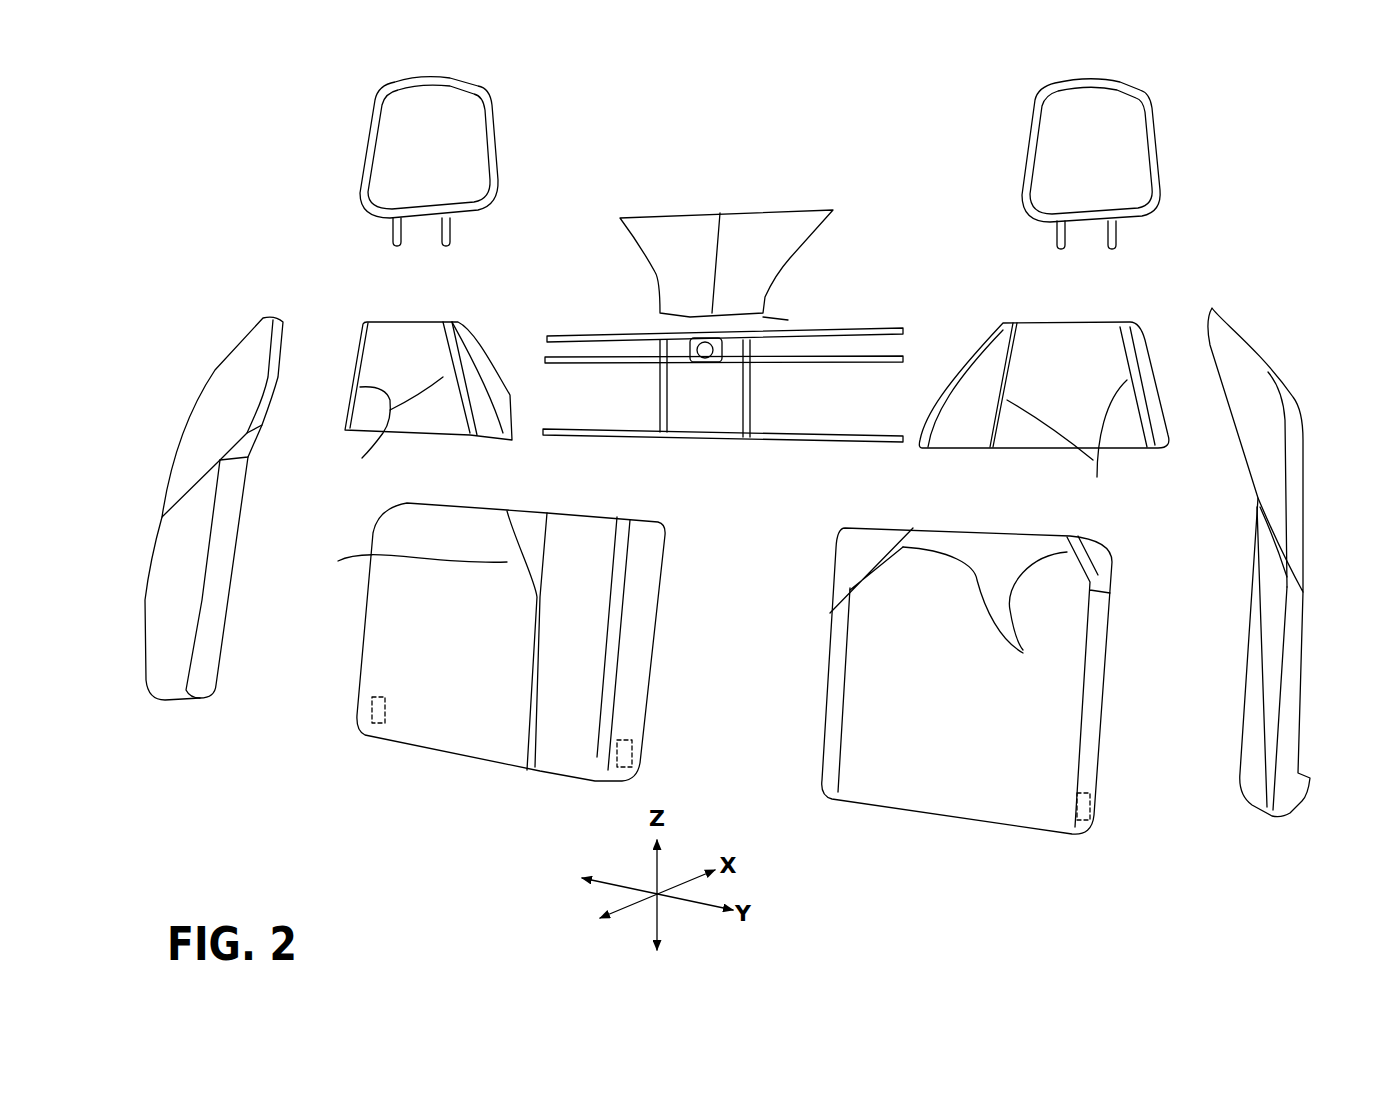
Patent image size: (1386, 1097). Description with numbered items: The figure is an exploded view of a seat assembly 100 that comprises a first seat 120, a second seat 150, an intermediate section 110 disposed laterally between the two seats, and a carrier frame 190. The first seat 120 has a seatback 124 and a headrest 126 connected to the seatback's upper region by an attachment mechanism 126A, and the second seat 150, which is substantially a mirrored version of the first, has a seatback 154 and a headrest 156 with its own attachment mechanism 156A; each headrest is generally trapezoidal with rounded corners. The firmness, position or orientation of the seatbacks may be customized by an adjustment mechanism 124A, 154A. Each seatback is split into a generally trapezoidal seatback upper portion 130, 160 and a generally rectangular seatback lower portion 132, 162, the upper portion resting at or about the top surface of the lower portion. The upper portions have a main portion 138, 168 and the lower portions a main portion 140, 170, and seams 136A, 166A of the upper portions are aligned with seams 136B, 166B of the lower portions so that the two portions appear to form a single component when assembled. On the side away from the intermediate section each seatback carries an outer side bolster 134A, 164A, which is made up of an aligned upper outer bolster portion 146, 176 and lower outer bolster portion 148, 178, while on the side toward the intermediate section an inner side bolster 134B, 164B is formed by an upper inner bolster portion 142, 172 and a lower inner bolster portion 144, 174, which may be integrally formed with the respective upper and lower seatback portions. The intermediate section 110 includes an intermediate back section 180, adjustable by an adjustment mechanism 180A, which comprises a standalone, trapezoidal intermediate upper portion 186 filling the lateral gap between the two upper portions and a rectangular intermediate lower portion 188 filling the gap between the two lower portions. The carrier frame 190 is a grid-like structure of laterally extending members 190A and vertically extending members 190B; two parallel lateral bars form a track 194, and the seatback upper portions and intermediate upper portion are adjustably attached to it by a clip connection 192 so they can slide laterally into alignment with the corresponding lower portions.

The seat assembly 100 is at (1227, 107).
The intermediate section 110 is at (782, 188).
The first seat 120 is at (238, 212).
The seatback 124 is at (453, 804).
The adjustment mechanism 124A is at (371, 708).
The headrest 126 is at (363, 140).
The attachment mechanism 126A is at (390, 230).
The seatback upper portion 130 is at (356, 323).
The seatback lower portion 132 is at (426, 753).
The outer side bolster 134A is at (222, 741).
The inner side bolster 134B is at (486, 286).
The seams 136A is at (362, 458).
The seams 136B is at (396, 558).
The main portion 138 is at (393, 347).
The main portion 140 is at (398, 657).
The upper inner bolster portion 142 is at (480, 353).
The lower inner bolster portion 144 is at (527, 518).
The upper outer bolster portion 146 is at (233, 390).
The lower outer bolster portion 148 is at (166, 688).
The second seat 150 is at (1214, 199).
The seatback 154 is at (1094, 854).
The adjustment mechanism 154A is at (1092, 805).
The headrest 156 is at (1147, 147).
The attachment mechanism 156A is at (1053, 233).
The seatback upper portion 160 is at (1136, 317).
The seatback lower portion 162 is at (940, 821).
The outer side bolster 164A is at (1291, 365).
The inner side bolster 164B is at (977, 380).
The seams 166A is at (1093, 460).
The seams 166B is at (1023, 653).
The main portion 168 is at (1093, 333).
The main portion 170 is at (907, 765).
The upper inner bolster portion 172 is at (926, 374).
The lower inner bolster portion 174 is at (857, 552).
The upper outer bolster portion 176 is at (1288, 498).
The lower outer bolster portion 178 is at (1287, 682).
The intermediate back section 180 is at (576, 801).
The adjustment mechanism 180A is at (632, 752).
The intermediate upper portion 186 is at (690, 240).
The intermediate lower portion 188 is at (623, 682).
The carrier frame 190 is at (703, 335).
The laterally extending members 190A is at (597, 336).
The vertically extending members 190B is at (657, 400).
The clip connection 192 is at (707, 362).
The track 194 is at (621, 304).